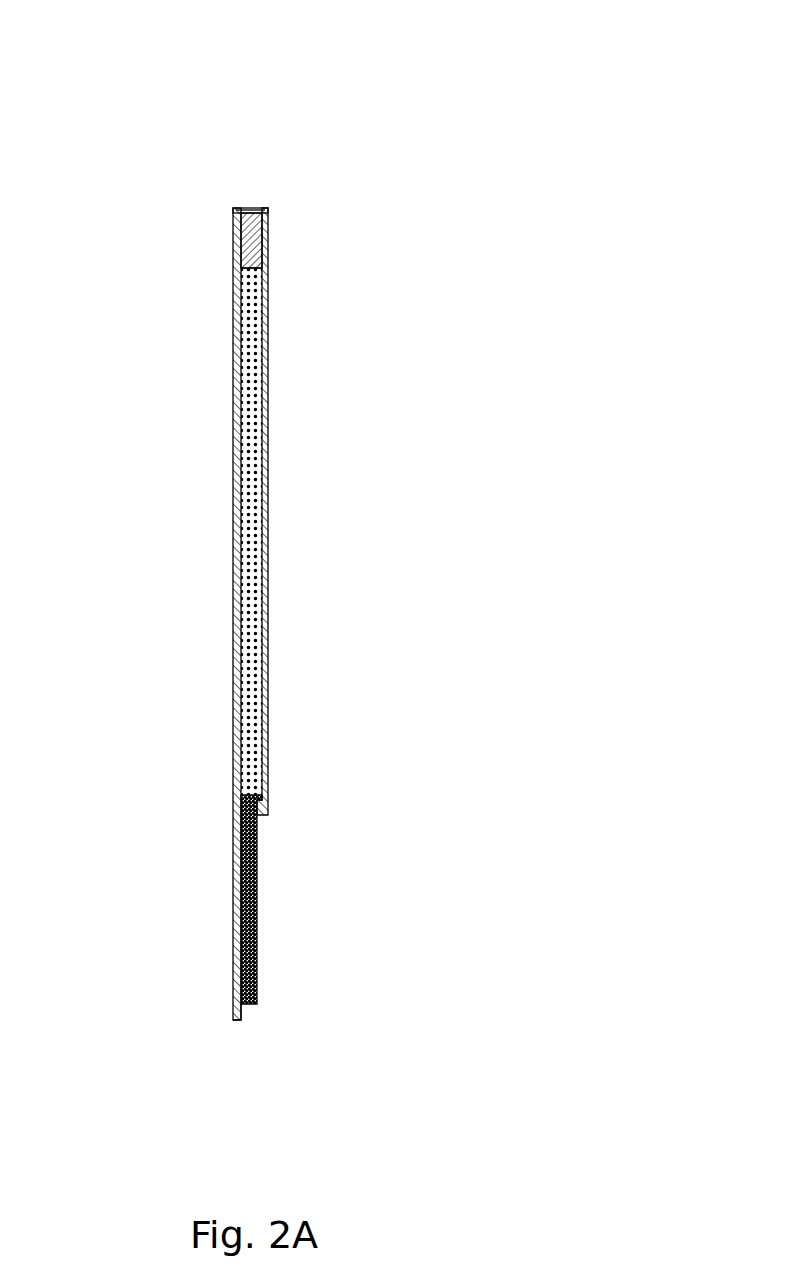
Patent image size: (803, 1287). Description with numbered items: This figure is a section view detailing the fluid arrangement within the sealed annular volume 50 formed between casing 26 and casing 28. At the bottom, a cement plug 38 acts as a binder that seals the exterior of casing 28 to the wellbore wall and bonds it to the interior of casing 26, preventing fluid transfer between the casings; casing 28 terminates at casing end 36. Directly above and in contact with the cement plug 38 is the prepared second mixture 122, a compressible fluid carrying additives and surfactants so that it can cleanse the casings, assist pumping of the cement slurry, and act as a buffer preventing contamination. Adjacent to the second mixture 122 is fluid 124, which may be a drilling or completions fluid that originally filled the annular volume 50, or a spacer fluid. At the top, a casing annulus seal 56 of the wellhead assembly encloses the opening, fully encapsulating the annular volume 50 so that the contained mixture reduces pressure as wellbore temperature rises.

The annular volume 50 is at (251, 98).
The casing annulus seal 56 is at (250, 208).
The fluid 124 is at (265, 245).
The second mixture 122 is at (253, 405).
The casing 26 is at (268, 585).
The casing 28 is at (237, 699).
The cement plug 38 is at (257, 940).
The casing end 36 is at (240, 1021).